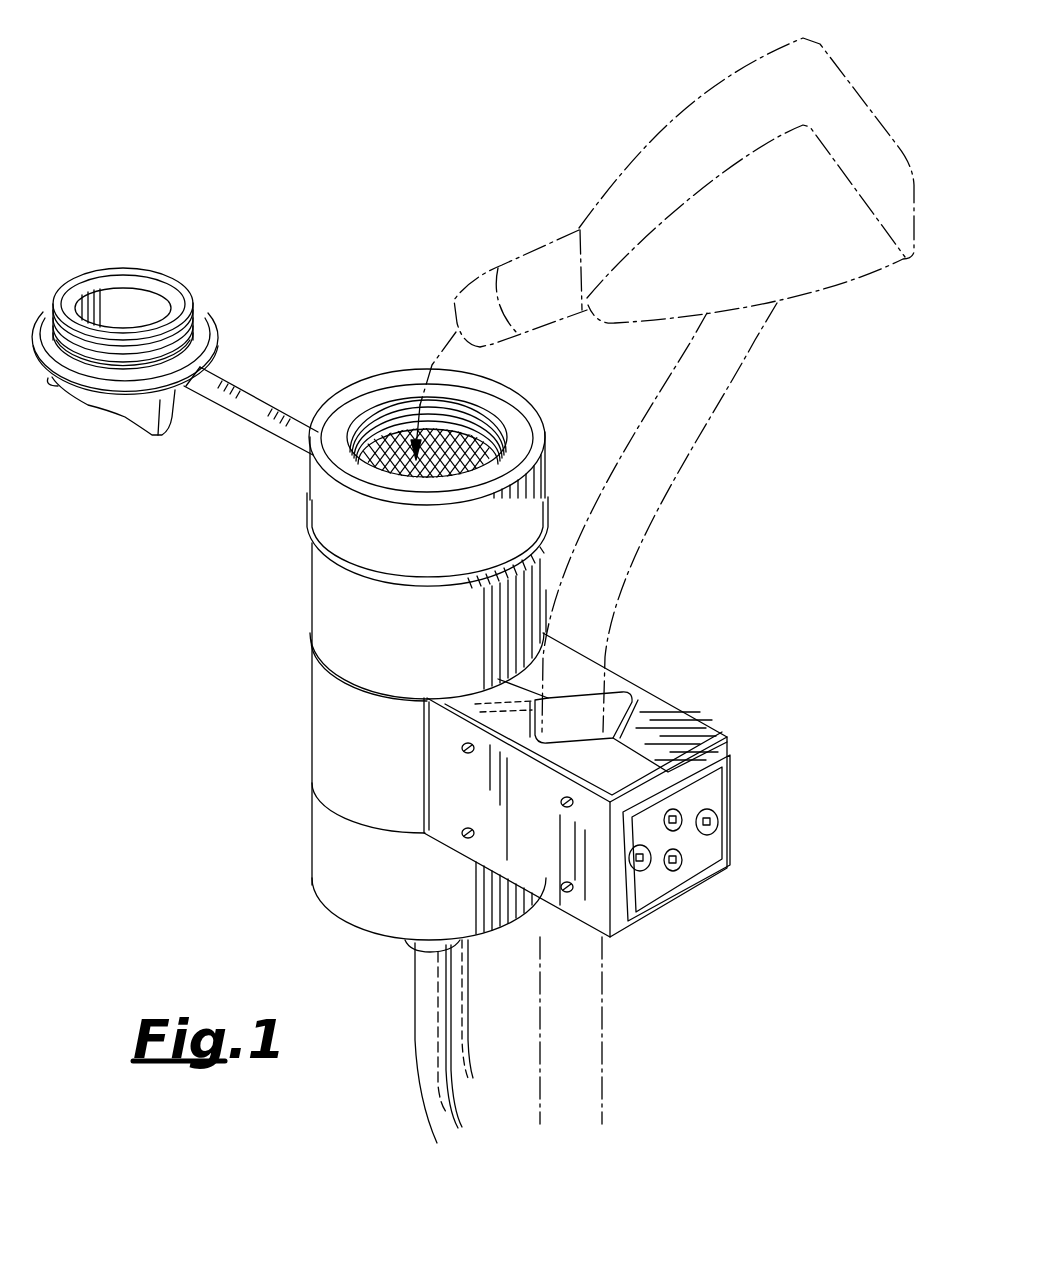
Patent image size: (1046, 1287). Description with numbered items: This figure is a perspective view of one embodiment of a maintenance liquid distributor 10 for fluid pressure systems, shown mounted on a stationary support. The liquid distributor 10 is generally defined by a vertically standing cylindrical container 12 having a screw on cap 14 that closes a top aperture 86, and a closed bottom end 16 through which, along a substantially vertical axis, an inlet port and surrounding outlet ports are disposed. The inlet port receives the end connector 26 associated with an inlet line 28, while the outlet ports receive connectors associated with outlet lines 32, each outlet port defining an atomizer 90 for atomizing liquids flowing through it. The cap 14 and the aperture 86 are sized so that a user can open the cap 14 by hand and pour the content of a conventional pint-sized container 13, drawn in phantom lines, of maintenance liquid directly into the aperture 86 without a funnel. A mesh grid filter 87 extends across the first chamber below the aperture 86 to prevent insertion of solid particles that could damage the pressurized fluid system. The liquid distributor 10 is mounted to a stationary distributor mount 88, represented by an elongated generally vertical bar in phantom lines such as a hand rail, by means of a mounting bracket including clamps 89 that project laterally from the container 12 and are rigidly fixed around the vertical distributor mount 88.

The liquid distributor 10 is at (286, 84).
The cylindrical container 12 is at (297, 623).
The pint-sized container 13 is at (562, 232).
The screw on cap 14 is at (213, 320).
The closed bottom end 16 is at (360, 927).
The end connector 26 is at (413, 947).
The inlet line 28 is at (417, 1000).
The outlet line 32 is at (462, 970).
The top aperture 86 is at (371, 413).
The mesh grid filter 87 is at (383, 437).
The distributor mount 88 is at (672, 497).
The clamps 89 is at (678, 702).
The atomizer 90 is at (615, 940).